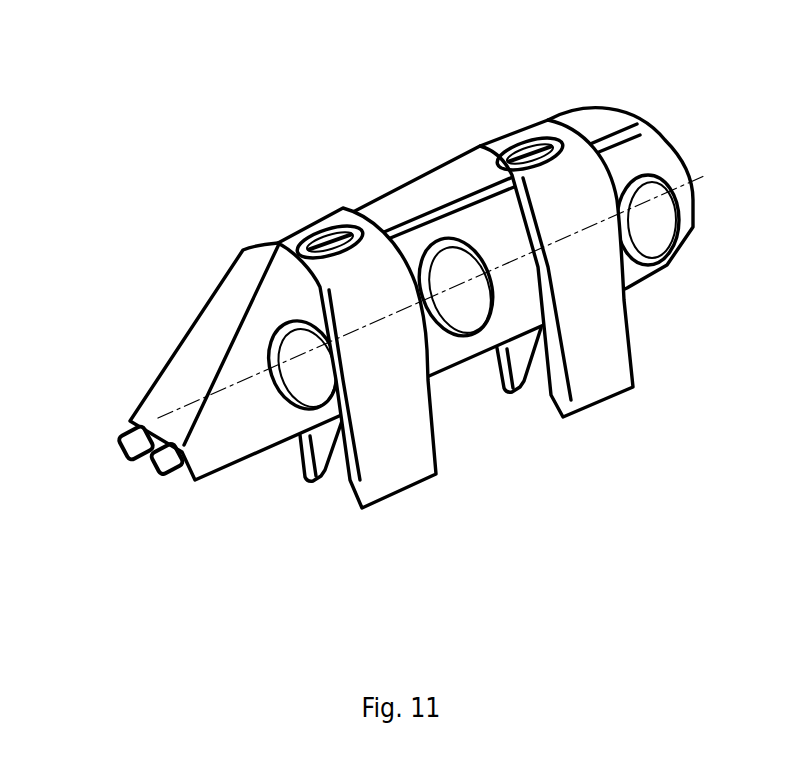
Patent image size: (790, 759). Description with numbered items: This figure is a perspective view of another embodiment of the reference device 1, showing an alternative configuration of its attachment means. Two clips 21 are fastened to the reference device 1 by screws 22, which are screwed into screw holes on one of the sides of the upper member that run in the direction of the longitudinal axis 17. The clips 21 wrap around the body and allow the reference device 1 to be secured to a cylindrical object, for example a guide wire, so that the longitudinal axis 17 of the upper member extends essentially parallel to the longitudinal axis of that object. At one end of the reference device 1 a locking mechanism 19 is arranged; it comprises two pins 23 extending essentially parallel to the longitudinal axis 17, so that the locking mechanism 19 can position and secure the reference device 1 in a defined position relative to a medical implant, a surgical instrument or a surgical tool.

The reference device 1 is at (413, 174).
The longitudinal axis 17 is at (694, 177).
The locking mechanism 19 is at (119, 432).
The clips 21 is at (595, 310).
The screws 22 is at (549, 152).
The pins 23 is at (172, 462).